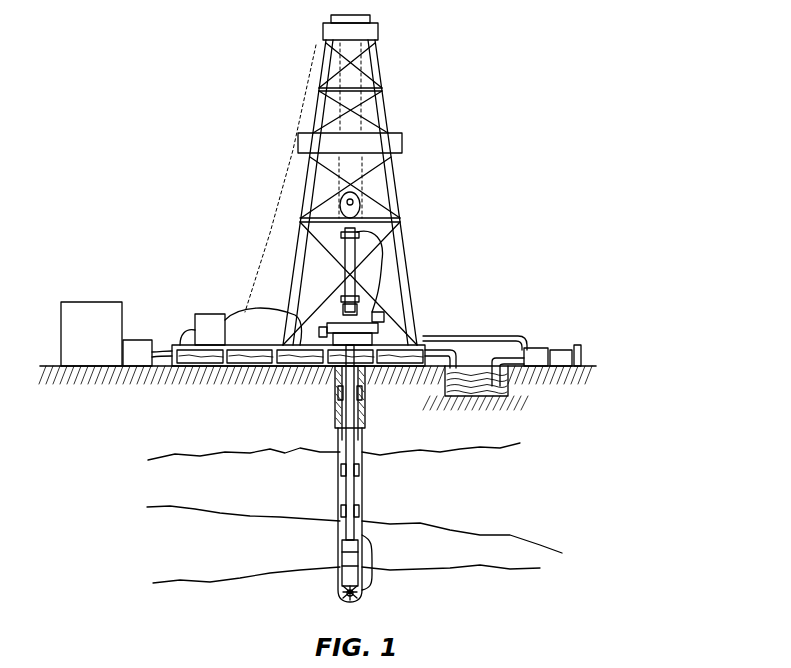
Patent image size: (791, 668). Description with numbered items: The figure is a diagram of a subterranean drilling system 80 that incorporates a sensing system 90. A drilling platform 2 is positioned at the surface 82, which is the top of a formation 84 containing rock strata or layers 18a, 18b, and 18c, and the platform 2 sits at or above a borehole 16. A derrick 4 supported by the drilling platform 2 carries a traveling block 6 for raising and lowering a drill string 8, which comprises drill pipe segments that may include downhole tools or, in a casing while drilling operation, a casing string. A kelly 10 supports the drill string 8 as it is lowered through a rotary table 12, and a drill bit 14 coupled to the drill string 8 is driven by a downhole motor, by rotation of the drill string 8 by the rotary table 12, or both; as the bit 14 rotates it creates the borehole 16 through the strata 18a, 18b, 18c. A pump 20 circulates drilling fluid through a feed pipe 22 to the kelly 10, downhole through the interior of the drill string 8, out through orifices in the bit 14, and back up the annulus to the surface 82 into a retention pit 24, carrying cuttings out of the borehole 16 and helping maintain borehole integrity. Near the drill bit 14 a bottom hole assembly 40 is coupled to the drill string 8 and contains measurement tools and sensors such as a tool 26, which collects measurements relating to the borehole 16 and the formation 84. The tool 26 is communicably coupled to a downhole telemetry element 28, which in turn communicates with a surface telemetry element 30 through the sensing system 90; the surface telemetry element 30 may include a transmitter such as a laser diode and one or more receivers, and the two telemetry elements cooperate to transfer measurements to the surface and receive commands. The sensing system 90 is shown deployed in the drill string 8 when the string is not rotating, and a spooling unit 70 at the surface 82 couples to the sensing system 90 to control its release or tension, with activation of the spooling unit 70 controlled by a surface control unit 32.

The drilling platform 2 is at (173, 346).
The derrick 4 is at (377, 87).
The traveling block 6 is at (360, 203).
The drill string 8 is at (360, 456).
The kelly 10 is at (352, 272).
The rotary table 12 is at (372, 330).
The drill bit 14 is at (352, 600).
The borehole 16 is at (362, 478).
The rock stratum 18a is at (190, 541).
The rock stratum 18b is at (190, 489).
The rock stratum 18c is at (510, 441).
The pump 20 is at (537, 348).
The feed pipe 22 is at (471, 337).
The retention pit 24 is at (450, 396).
The tool 26 is at (350, 565).
The downhole telemetry element 28 is at (364, 550).
The surface telemetry element 30 is at (149, 364).
The surface control unit 32 is at (107, 334).
The bottom hole assembly 40 is at (372, 562).
The spooling unit 70 is at (207, 314).
The drilling system 80 is at (418, 121).
The surface 82 is at (56, 366).
The formation 84 is at (115, 415).
The sensing system 90 is at (340, 380).